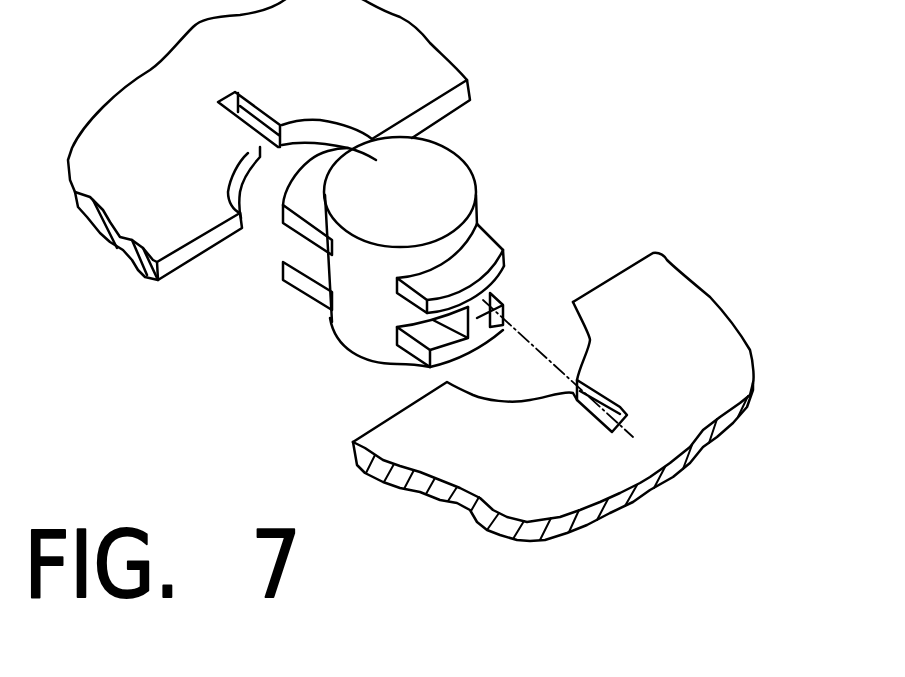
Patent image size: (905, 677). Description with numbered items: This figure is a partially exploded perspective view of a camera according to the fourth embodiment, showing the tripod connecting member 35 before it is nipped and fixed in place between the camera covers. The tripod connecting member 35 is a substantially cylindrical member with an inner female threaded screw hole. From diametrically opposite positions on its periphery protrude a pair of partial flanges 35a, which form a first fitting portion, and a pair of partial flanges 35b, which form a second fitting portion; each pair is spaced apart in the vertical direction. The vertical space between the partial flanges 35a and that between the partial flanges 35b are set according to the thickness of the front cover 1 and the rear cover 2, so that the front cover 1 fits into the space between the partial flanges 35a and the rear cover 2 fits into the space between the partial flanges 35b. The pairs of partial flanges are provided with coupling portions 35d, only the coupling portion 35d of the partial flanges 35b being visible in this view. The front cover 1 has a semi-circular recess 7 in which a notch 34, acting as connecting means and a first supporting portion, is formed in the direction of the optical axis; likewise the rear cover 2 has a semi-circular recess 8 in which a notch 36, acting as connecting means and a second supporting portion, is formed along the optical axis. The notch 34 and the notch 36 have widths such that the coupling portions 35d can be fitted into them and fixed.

The front cover 1 is at (420, 68).
The rear cover 2 is at (662, 283).
The semi-circular recess 7 is at (248, 152).
The semi-circular recess 8 is at (573, 357).
The notch 34 is at (255, 108).
The tripod connecting member 35 is at (443, 200).
The partial flanges 35a is at (312, 192).
The partial flanges 35b is at (483, 250).
The coupling portion 35d is at (493, 297).
The notch 36 is at (617, 402).